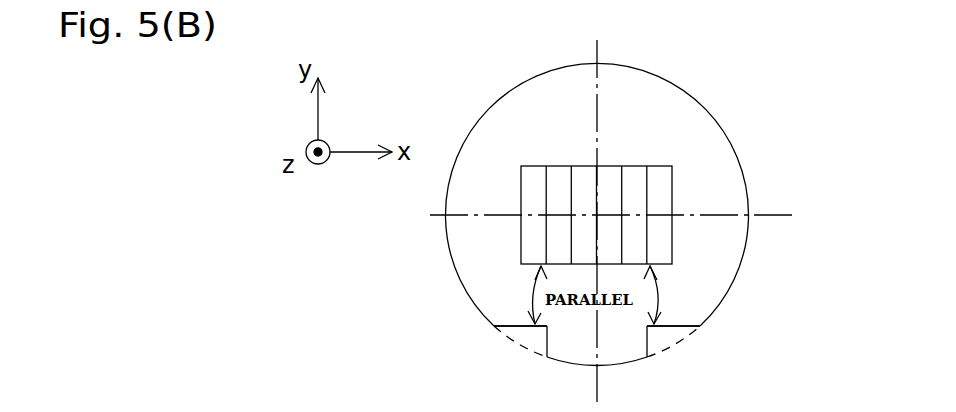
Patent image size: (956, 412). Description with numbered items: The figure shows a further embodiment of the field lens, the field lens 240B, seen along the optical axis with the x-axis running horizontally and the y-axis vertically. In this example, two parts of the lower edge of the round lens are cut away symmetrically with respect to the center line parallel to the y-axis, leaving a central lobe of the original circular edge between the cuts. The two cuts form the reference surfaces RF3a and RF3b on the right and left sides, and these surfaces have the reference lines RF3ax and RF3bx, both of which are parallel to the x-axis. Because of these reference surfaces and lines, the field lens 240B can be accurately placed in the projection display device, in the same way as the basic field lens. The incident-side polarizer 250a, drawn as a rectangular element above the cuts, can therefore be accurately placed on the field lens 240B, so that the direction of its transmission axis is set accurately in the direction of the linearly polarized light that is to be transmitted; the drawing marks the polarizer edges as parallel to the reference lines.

The field lens 240B is at (721, 127).
The incident-side polarizer 250a is at (640, 166).
The reference line RF3bx is at (513, 324).
The reference surface RF3b is at (520, 331).
The reference line RF3ax is at (665, 325).
The reference surface RF3a is at (675, 332).